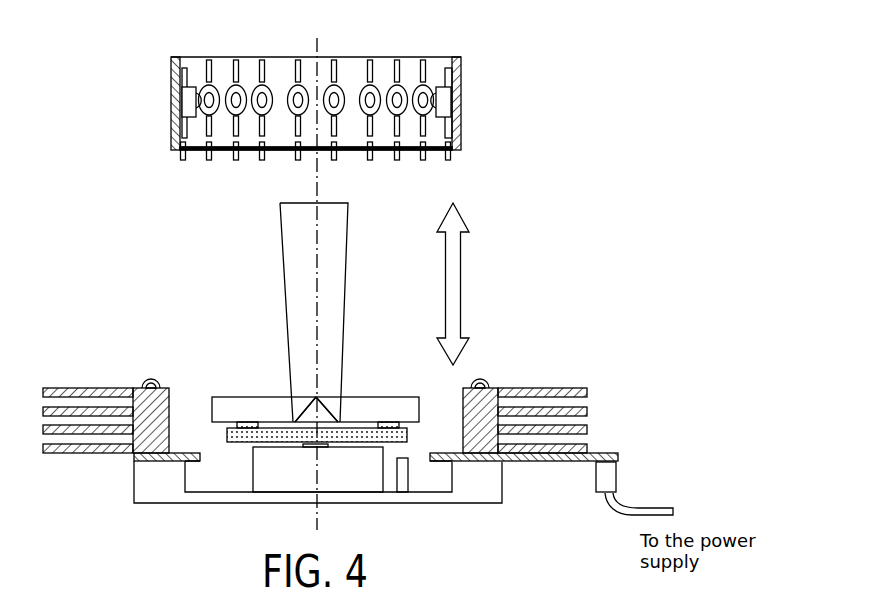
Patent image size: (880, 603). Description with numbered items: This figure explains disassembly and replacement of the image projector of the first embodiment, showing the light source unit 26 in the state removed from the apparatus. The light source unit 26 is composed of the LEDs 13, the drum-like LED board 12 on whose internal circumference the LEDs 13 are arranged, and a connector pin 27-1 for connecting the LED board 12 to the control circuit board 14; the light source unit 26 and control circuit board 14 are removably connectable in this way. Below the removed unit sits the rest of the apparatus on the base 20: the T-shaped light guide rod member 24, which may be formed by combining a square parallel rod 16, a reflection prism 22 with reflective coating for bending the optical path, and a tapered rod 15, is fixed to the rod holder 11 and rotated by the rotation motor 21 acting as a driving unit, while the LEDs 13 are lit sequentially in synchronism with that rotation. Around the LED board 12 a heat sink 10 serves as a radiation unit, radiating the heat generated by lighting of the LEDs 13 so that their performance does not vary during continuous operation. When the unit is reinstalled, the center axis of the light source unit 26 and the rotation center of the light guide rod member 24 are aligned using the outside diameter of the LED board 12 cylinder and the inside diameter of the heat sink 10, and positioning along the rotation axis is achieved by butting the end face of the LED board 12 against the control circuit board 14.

The heat sink 10 is at (590, 410).
The rod holder 11 is at (228, 433).
The LED board 12 is at (466, 73).
The LEDs 13 is at (438, 90).
The control circuit board 14 is at (540, 467).
The tapered rod 15 is at (348, 238).
The square parallel rod 16 is at (253, 408).
The base 20 is at (152, 481).
The rotation motor 21 is at (268, 468).
The reflection prism 22 is at (328, 417).
The light guide rod member 24 is at (343, 378).
The light source unit 26 is at (471, 108).
The connector pin 27-1 is at (452, 156).